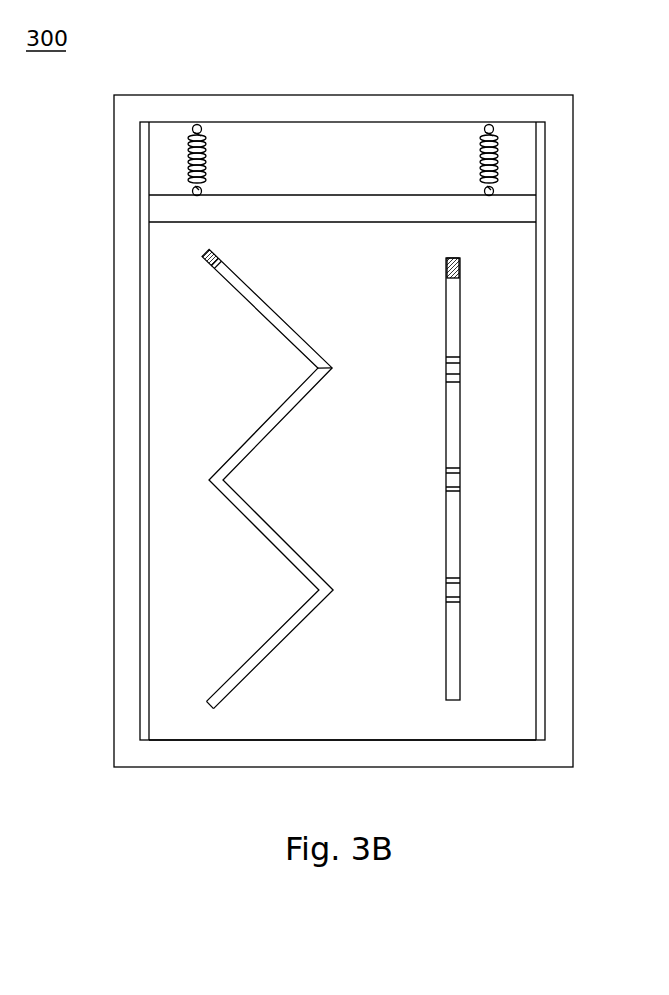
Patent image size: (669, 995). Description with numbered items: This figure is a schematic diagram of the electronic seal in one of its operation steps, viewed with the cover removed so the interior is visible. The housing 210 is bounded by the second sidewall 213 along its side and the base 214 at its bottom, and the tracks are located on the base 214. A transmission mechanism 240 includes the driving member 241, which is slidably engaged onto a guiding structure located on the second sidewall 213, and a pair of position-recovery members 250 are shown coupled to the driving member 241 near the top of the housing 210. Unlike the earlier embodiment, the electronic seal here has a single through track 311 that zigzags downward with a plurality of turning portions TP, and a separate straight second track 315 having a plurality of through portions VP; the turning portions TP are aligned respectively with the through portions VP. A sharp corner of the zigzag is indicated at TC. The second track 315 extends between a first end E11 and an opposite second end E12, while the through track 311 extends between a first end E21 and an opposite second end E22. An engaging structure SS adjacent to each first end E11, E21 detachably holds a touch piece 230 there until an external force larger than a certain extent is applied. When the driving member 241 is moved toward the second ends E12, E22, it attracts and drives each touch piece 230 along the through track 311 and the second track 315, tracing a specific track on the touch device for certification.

The housing 210 is at (553, 315).
The second sidewall 213 is at (128, 350).
The base 214 is at (270, 710).
The transmission mechanism 240 is at (575, 192).
The driving member 241 is at (525, 205).
The position-recovery member 250 is at (500, 152).
The through track 311 is at (237, 672).
The second track 315 is at (455, 640).
The touch piece 230 is at (462, 262).
The engaging structure SS is at (228, 264).
The turning portion TP is at (330, 367).
The turning corner TC is at (332, 579).
The through portion VP is at (462, 372).
The first end E11 is at (447, 258).
The second end E12 is at (451, 702).
The first end E21 is at (206, 254).
The second end E22 is at (207, 708).